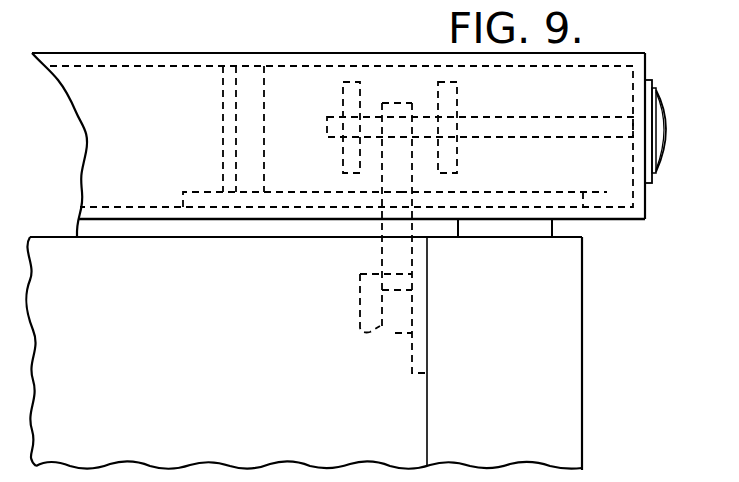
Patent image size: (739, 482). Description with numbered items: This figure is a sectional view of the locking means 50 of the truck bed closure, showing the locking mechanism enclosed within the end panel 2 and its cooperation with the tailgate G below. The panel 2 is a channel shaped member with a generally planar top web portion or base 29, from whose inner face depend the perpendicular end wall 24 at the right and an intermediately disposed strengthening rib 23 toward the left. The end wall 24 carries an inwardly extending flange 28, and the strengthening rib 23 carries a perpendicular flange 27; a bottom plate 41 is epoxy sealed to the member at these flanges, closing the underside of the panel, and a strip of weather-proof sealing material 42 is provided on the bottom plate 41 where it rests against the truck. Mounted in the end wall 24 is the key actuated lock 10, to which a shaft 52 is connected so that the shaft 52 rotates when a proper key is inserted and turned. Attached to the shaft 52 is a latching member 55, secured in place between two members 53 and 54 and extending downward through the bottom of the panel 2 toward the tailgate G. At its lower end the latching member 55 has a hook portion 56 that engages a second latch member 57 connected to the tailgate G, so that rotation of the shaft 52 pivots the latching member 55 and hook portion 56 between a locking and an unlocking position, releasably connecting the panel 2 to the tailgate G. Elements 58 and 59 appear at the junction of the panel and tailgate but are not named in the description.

The panel 2 is at (232, 34).
The planar top web portion or base 29 is at (288, 58).
The strengthening rib 23 is at (222, 93).
The flange 27 is at (205, 188).
The bottom plate 41 is at (78, 212).
The strip of weather-proof sealing material 42 is at (123, 225).
The member 53 is at (343, 93).
The latching member 55 is at (413, 88).
The member 54 is at (457, 100).
The shaft 52 is at (536, 123).
The flange 28 is at (611, 170).
The end wall 24 is at (640, 73).
The key actuated lock 10 is at (667, 123).
The locking means 50 is at (707, 158).
The rear wall 58 is at (645, 211).
The support 59 is at (555, 226).
The second latch member 57 is at (360, 303).
The hook portion 56 is at (396, 333).
The tailgate G is at (563, 393).